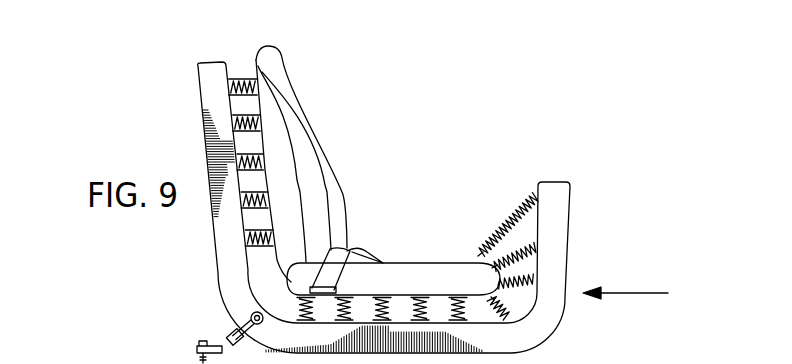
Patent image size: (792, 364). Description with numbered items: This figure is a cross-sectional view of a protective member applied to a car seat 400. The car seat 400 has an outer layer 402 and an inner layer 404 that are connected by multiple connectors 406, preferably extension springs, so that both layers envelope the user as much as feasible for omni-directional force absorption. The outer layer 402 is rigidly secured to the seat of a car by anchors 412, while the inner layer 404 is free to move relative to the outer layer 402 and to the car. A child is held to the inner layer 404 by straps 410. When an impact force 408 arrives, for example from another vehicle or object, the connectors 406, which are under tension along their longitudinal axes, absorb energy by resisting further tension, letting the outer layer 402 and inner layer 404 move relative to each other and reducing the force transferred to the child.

The car seat 400 is at (461, 98).
The outer layer 402 is at (198, 83).
The inner layer 404 is at (282, 62).
The connectors 406 is at (239, 66).
The impact force 408 is at (632, 290).
The straps 410 is at (337, 165).
The anchors 412 is at (223, 337).